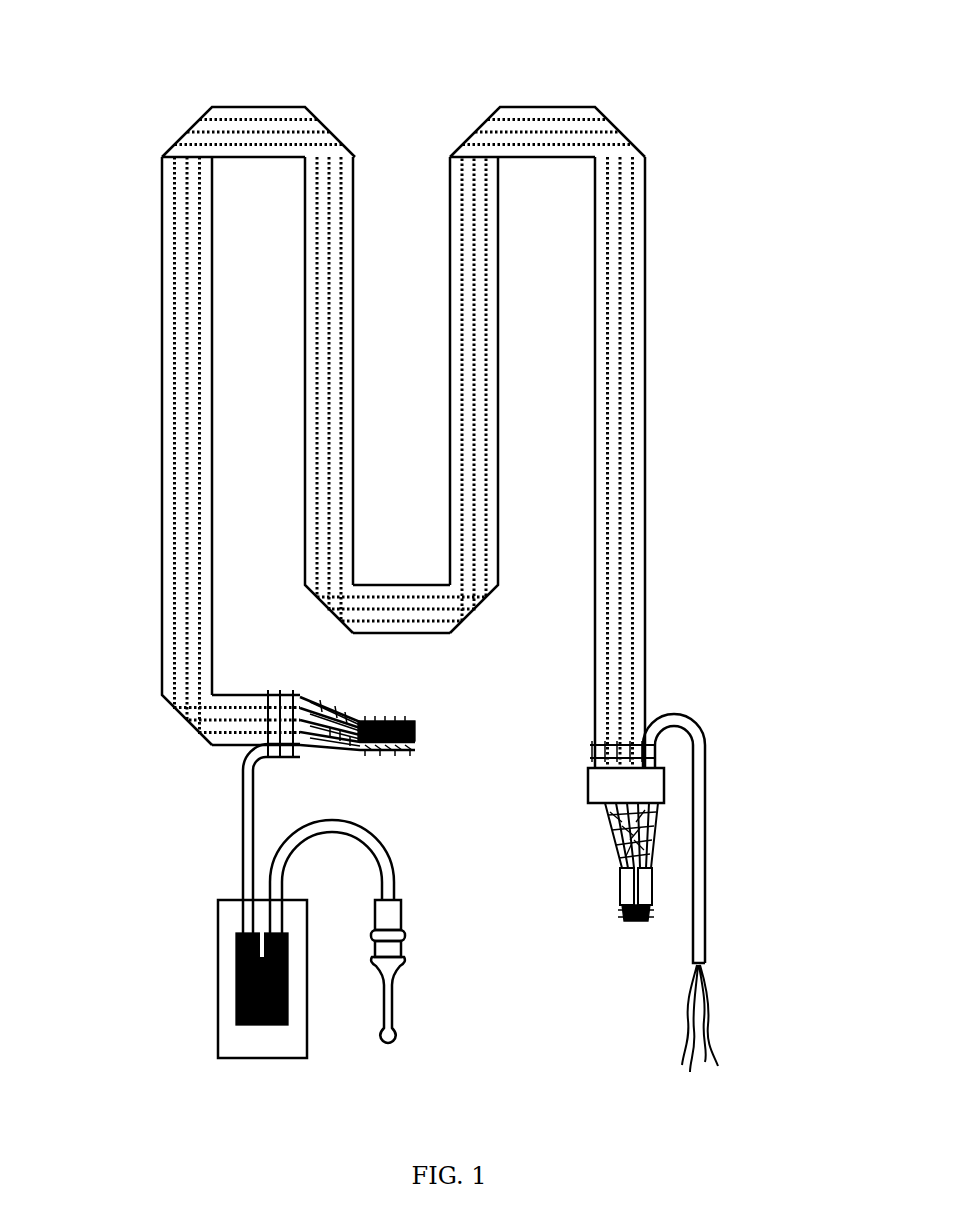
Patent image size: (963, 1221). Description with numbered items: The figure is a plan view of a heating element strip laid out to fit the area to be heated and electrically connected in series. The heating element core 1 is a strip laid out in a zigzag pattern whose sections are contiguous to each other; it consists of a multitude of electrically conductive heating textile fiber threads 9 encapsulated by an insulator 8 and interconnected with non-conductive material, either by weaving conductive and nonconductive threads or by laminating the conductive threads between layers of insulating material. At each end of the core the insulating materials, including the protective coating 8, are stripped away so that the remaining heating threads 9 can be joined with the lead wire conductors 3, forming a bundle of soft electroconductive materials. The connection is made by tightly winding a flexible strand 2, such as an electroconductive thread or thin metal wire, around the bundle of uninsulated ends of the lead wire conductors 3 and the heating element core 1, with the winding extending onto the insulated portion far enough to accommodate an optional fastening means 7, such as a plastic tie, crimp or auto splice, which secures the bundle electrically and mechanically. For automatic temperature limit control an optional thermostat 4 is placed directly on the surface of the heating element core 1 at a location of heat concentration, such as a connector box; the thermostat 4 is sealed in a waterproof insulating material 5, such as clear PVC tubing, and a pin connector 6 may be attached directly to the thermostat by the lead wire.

The heating element core 1 is at (256, 106).
The flexible strand 2 is at (375, 752).
The lead wire conductors 3 is at (243, 776).
The thermostat 4 is at (262, 1025).
The waterproof insulating material 5 is at (218, 1032).
The pin connector 6 is at (395, 1005).
The fastening means 7 is at (620, 898).
The insulator 8 is at (633, 427).
The electrically conductive heating textile fiber threads 9 is at (410, 722).